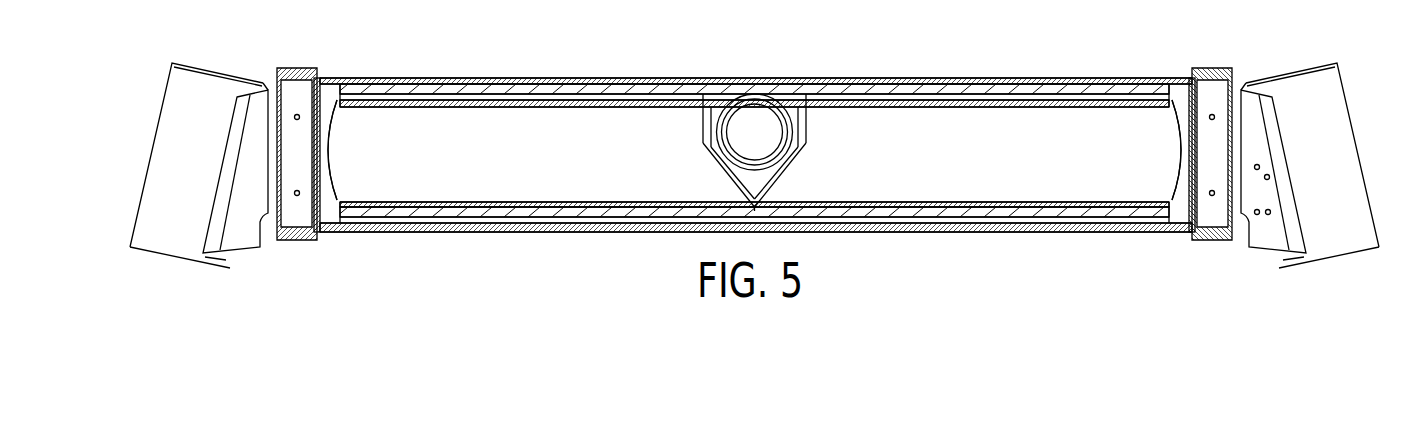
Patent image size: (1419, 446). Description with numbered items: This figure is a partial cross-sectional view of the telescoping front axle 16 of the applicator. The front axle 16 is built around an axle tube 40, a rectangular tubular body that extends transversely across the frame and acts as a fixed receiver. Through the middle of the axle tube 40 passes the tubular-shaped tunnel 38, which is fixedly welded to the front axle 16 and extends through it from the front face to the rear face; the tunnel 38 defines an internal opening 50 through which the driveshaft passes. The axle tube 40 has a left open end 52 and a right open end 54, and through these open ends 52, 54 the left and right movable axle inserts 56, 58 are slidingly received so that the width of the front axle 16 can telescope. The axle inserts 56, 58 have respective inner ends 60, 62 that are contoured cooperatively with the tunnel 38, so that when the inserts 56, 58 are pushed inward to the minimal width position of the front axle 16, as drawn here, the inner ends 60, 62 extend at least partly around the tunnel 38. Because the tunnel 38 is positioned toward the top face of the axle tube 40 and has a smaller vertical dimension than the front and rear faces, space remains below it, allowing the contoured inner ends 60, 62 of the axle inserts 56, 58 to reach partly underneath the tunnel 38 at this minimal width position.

The front axle 16 is at (751, 165).
The tubular-shaped tunnel 38 is at (721, 103).
The axle tube 40 is at (518, 88).
The internal opening 50 is at (763, 137).
The left open end 52 is at (377, 163).
The right open end 54 is at (1138, 162).
The left movable axle insert 56 is at (403, 130).
The right movable axle insert 58 is at (1108, 123).
The inner end of left axle insert 60 is at (731, 175).
The inner end of right axle insert 62 is at (783, 164).